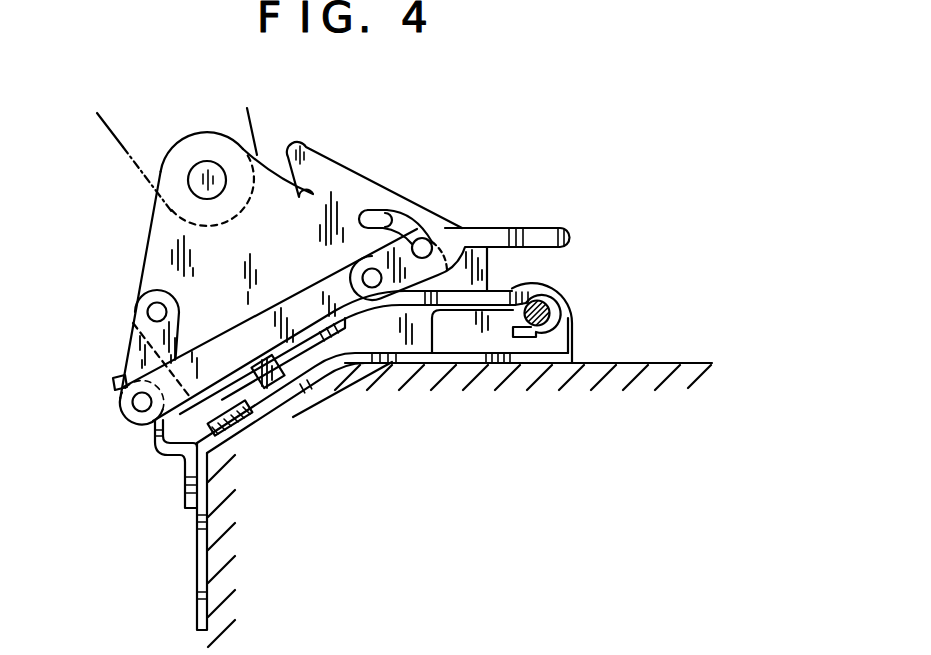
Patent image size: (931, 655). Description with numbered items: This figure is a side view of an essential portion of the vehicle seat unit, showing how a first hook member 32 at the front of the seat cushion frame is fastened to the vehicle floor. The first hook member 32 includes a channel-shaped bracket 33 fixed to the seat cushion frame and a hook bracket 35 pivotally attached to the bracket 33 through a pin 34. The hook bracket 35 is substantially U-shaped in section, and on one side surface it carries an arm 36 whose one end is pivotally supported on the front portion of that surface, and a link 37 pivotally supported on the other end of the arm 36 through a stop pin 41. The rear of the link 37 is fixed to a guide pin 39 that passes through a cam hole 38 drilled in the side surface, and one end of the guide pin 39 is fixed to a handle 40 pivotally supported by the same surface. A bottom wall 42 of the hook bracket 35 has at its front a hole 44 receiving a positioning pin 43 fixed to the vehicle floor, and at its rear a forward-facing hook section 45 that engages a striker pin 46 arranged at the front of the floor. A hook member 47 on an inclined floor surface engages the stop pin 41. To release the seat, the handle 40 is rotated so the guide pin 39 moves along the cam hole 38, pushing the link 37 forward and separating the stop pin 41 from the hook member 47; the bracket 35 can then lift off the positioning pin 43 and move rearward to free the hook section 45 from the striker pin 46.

The first hook member 32 is at (354, 150).
The channel-shaped bracket 33 is at (243, 131).
The pin 34 is at (199, 178).
The hook bracket 35 is at (160, 243).
The arm 36 is at (140, 348).
The link 37 is at (290, 308).
The cam hole 38 is at (398, 214).
The guide pin 39 is at (426, 239).
The handle 40 is at (550, 230).
The stop pin 41 is at (123, 413).
The bottom wall 42 is at (357, 320).
The positioning pin 43 is at (286, 407).
The hole 44 is at (250, 392).
The hook section 45 is at (552, 308).
The striker pin 46 is at (552, 314).
The hook member 47 is at (152, 448).